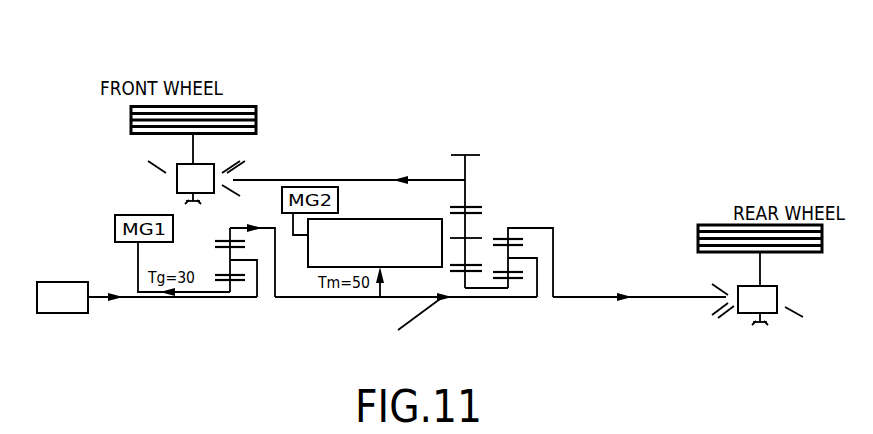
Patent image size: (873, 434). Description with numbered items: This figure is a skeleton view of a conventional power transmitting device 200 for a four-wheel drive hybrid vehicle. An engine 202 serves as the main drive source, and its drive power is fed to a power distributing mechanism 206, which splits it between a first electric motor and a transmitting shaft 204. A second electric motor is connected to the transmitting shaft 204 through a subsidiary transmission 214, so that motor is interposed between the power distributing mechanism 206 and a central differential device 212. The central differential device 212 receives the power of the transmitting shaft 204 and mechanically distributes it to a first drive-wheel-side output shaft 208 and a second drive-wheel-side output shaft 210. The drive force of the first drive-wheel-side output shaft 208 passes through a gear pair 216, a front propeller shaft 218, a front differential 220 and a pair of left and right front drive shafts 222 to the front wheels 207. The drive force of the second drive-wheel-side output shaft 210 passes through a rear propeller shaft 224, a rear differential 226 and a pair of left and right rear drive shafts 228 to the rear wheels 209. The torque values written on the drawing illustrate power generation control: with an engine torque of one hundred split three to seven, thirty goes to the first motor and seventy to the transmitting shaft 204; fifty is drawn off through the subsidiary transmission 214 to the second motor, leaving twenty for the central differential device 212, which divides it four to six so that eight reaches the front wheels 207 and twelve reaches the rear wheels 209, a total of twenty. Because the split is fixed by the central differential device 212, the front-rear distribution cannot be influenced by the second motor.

The power transmitting device 200 is at (470, 80).
The engine 202 is at (67, 306).
The transmitting shaft 204 is at (313, 299).
The power distributing mechanism 206 is at (228, 309).
The front wheels 207 is at (231, 117).
The first drive-wheel-side output shaft 208 is at (466, 283).
The rear wheels 209 is at (722, 232).
The second drive-wheel-side output shaft 210 is at (565, 299).
The central differential device 212 is at (530, 215).
The subsidiary transmission 214 is at (433, 228).
The gear pair 216 is at (509, 181).
The front propeller shaft 218 is at (341, 180).
The front differential 220 is at (177, 176).
The front drive shafts 222 is at (196, 148).
The rear propeller shaft 224 is at (673, 299).
The rear differential 226 is at (766, 300).
The rear drive shafts 228 is at (758, 267).